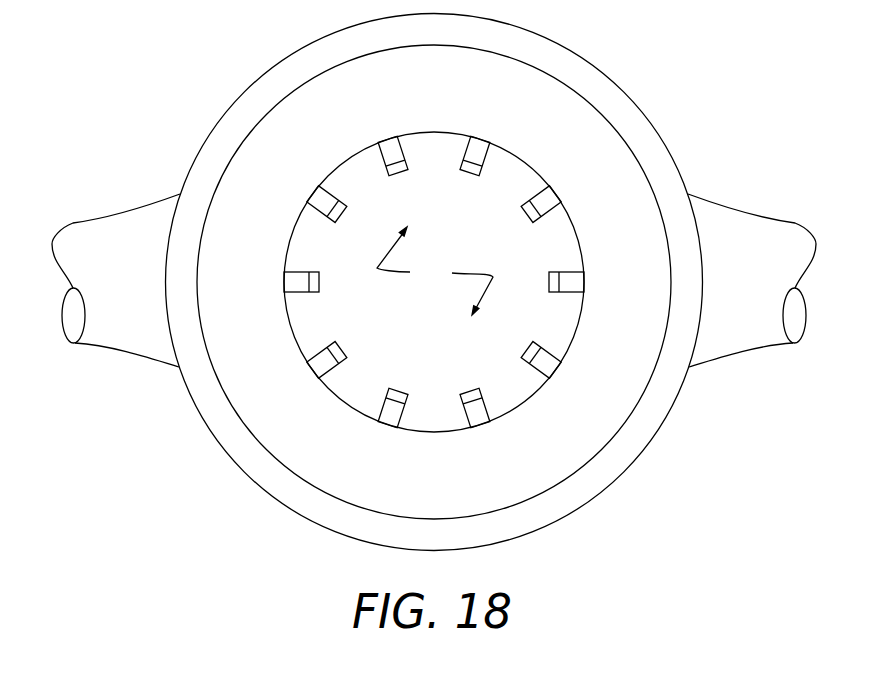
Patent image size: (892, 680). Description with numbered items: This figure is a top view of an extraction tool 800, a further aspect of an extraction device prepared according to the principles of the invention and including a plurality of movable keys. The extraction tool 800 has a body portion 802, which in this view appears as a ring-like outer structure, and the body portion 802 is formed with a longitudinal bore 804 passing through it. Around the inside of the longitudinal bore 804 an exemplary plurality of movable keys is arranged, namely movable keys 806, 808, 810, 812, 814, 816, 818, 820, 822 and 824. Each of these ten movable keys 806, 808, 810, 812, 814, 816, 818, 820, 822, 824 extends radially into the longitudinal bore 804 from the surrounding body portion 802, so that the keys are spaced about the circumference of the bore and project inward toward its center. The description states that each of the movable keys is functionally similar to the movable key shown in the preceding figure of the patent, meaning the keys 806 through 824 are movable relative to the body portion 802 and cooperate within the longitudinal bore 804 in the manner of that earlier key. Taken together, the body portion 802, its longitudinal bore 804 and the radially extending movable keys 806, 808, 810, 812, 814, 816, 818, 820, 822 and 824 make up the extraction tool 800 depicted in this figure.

The extraction tool 800 is at (434, 282).
The body portion 802 is at (570, 115).
The longitudinal bore 804 is at (434, 282).
The movable key 806 is at (323, 207).
The movable key 808 is at (390, 155).
The movable key 810 is at (475, 155).
The movable key 812 is at (543, 200).
The movable key 814 is at (568, 280).
The movable key 816 is at (547, 362).
The movable key 818 is at (480, 410).
The movable key 820 is at (395, 412).
The movable key 822 is at (323, 365).
The movable key 824 is at (293, 290).